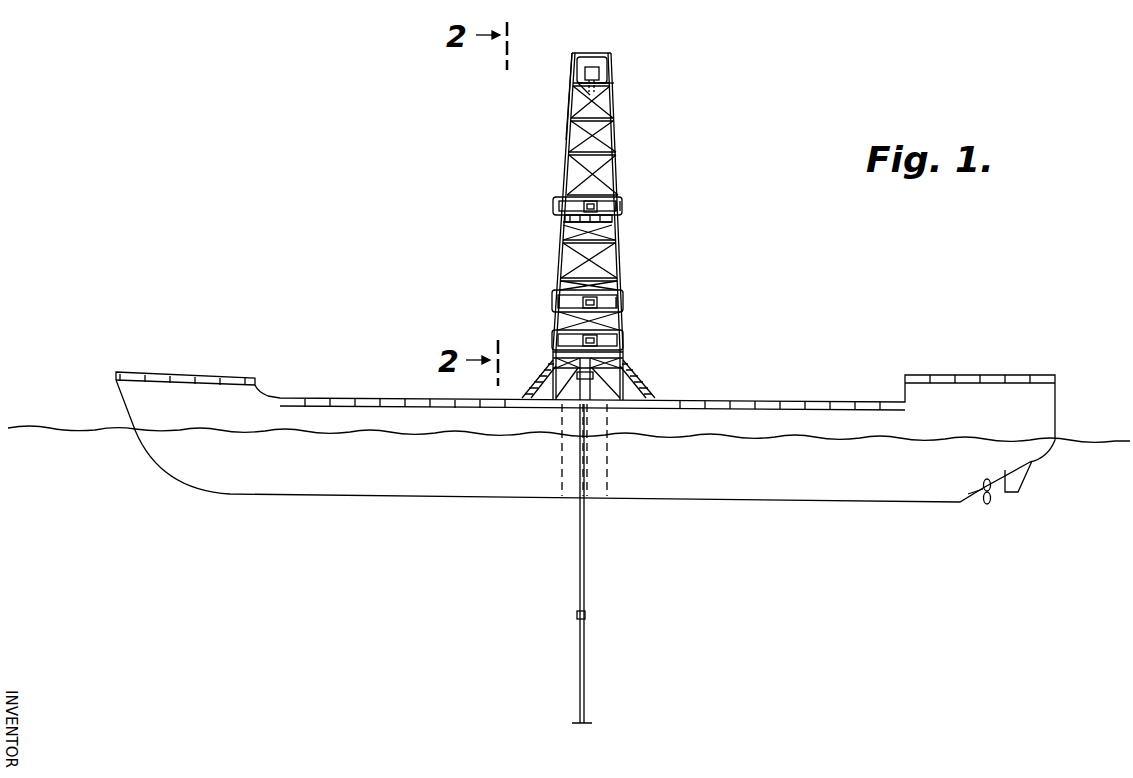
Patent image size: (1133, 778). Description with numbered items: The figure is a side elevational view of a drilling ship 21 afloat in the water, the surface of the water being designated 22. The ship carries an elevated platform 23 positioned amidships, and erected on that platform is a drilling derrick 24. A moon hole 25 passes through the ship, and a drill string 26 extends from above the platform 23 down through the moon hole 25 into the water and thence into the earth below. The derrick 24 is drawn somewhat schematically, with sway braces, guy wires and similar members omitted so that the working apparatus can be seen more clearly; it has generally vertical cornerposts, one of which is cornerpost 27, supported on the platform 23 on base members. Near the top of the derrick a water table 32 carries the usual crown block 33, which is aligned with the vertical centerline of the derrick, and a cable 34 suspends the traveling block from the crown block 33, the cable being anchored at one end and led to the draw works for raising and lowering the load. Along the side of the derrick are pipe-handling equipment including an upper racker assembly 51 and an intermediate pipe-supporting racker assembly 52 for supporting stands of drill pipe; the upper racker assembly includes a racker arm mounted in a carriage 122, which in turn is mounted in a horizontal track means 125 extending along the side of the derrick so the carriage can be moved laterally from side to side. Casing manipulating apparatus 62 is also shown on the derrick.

The drilling ship 21 is at (888, 360).
The surface of the water 22 is at (47, 426).
The elevated platform 23 is at (630, 355).
The drilling derrick 24 is at (640, 168).
The moon hole 25 is at (560, 497).
The drill string 26 is at (586, 588).
The cornerpost 27 is at (567, 128).
The water table 32 is at (612, 87).
The crown block 33 is at (600, 77).
The cable 34 is at (584, 88).
The upper racker assembly 51 is at (549, 205).
The intermediate pipe-supporting racker assembly 52 is at (541, 285).
The casing manipulating apparatus 62 is at (541, 327).
The carriage 122 is at (600, 208).
The horizontal track means 125 is at (624, 215).